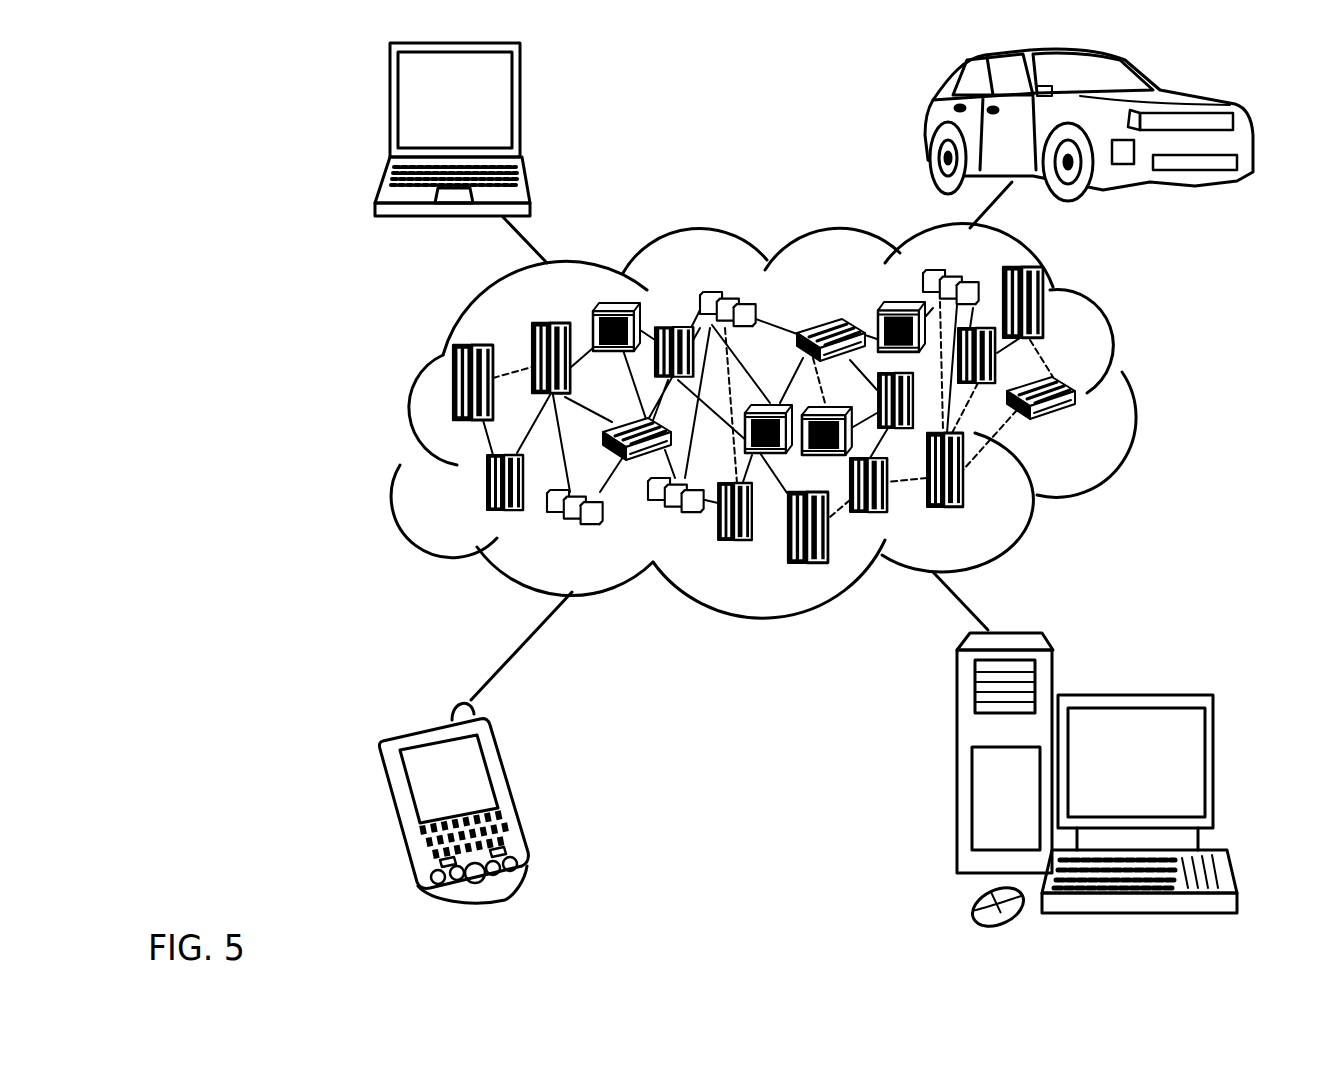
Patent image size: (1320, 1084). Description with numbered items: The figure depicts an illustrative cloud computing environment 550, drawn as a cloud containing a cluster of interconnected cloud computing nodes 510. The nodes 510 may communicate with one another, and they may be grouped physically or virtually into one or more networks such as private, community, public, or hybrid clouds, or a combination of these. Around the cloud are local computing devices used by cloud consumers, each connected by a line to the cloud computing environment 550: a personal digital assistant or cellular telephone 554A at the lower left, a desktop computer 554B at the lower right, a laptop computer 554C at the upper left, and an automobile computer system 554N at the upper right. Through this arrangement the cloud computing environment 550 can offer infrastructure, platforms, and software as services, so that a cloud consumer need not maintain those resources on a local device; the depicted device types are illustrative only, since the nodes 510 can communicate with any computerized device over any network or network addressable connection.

The cloud computing nodes 510 is at (1085, 426).
The cloud computing environment 550 is at (1136, 390).
The personal digital assistant (PDA) or cellular telephone 554A is at (508, 793).
The desktop computer 554B is at (1136, 695).
The laptop computer 554C is at (520, 108).
The automobile computer system 554N is at (926, 128).